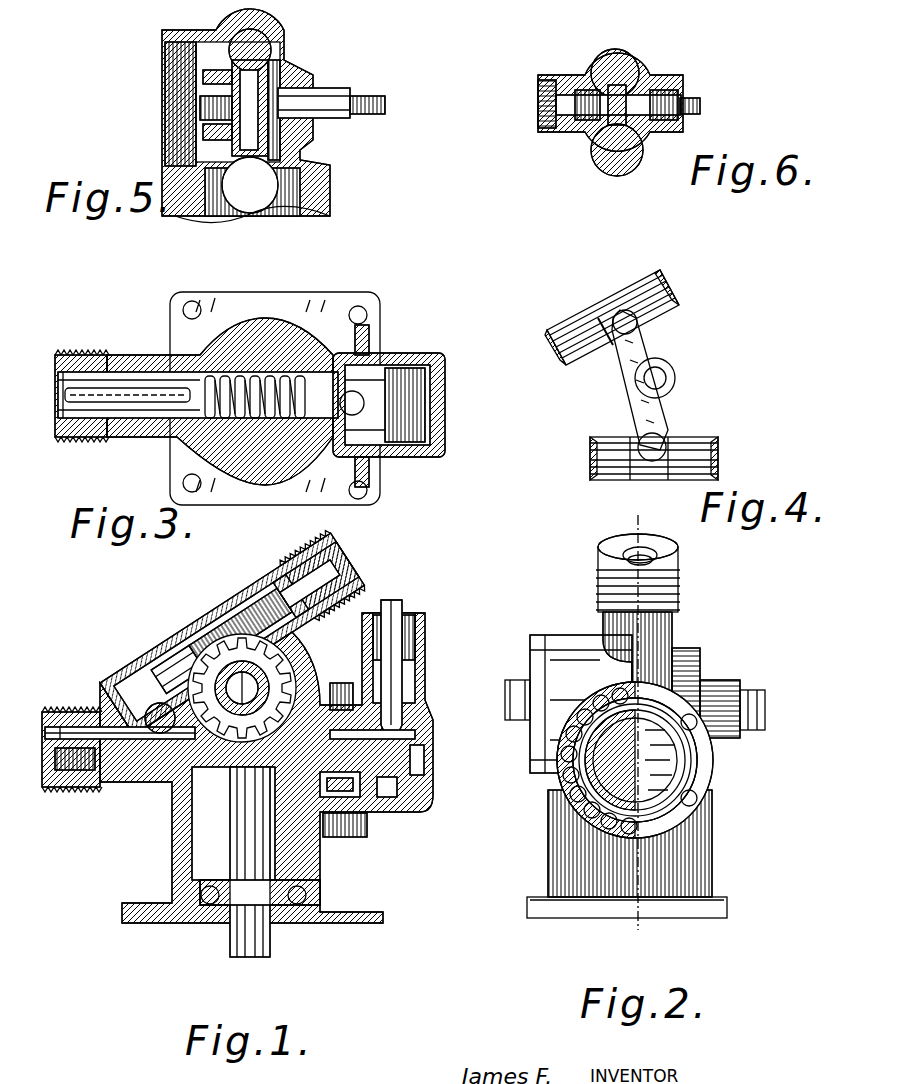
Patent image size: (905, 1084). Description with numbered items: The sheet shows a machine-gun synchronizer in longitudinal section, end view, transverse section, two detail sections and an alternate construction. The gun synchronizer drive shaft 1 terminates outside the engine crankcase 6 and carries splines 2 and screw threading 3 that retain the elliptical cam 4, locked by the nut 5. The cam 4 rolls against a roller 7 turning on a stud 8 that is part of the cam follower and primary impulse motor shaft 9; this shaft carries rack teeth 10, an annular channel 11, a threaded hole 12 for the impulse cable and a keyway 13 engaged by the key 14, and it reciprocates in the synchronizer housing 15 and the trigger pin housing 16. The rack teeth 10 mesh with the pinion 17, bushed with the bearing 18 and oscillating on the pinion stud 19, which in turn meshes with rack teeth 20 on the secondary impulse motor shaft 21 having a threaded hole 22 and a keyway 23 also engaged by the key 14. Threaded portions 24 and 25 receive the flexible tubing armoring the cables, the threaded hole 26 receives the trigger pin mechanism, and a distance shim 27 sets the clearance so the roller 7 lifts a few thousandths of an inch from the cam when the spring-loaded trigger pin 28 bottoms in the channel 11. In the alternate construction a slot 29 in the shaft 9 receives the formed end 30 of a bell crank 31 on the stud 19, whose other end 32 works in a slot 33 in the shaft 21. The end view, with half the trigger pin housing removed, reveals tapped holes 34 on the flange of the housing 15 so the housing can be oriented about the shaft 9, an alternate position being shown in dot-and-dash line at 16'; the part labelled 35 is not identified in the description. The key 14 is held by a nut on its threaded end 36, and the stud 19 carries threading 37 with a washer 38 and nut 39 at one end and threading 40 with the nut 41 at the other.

In FIG. 1, the gun synchronizer drive shaft 1 is at (240, 940).
In FIG. 2, the gun synchronizer drive shaft 1 is at (630, 935).
In FIG. 1, the splines 2 is at (260, 896).
In FIG. 1, the screw threading 3 is at (32, 752).
In FIG. 5, the cam 4 is at (275, 195).
In FIG. 3, the cam 4 is at (270, 335).
In FIG. 1, the cam 4 is at (200, 830).
In FIG. 1, the nut 5 is at (156, 618).
In FIG. 1, the engine crankcase 6 is at (110, 640).
In FIG. 1, the roller 7 is at (405, 815).
In FIG. 3, the stud 8 is at (390, 445).
In FIG. 1, the stud 8 is at (433, 756).
In FIG. 5, the cam follower and primary impulse motor shaft 9 is at (318, 150).
In FIG. 6, the cam follower and primary impulse motor shaft 9 is at (600, 165).
In FIG. 3, the cam follower and primary impulse motor shaft 9 is at (150, 375).
In FIG. 4, the cam follower and primary impulse motor shaft 9 is at (715, 450).
In FIG. 1, the cam follower and primary impulse motor shaft 9 is at (100, 790).
In FIG. 3, the rack teeth 10 is at (235, 385).
In FIG. 1, the rack teeth 10 is at (142, 782).
In FIG. 3, the annular channel 11 is at (402, 380).
In FIG. 1, the annular channel 11 is at (433, 800).
In FIG. 1, the threaded hole 12 is at (62, 712).
In FIG. 6, the keyway 13 is at (625, 140).
In FIG. 3, the keyway 13 is at (122, 388).
In FIG. 1, the keyway 13 is at (88, 712).
In FIG. 6, the key 14 is at (560, 130).
In FIG. 1, the key 14 is at (142, 700).
In FIG. 5, the synchronizer housing 15 is at (322, 182).
In FIG. 6, the synchronizer housing 15 is at (672, 82).
In FIG. 3, the synchronizer housing 15 is at (325, 310).
In FIG. 1, the synchronizer housing 15 is at (172, 868).
In FIG. 2, the synchronizer housing 15 is at (652, 858).
In FIG. 3, the trigger pin housing 16 is at (409, 402).
In FIG. 1, the trigger pin housing 16 is at (449, 687).
In FIG. 2, the trigger pin housing 16 is at (673, 655).
In FIG. 2, the alternate position of trigger pin housing 16' is at (512, 829).
In FIG. 5, the pinion 17 is at (290, 60).
In FIG. 1, the pinion 17 is at (300, 662).
In FIG. 5, the pinion gear bearing bushing 18 is at (238, 58).
In FIG. 1, the pinion gear bearing bushing 18 is at (262, 600).
In FIG. 5, the pinion stud 19 is at (336, 102).
In FIG. 4, the pinion stud 19 is at (662, 378).
In FIG. 1, the pinion stud 19 is at (250, 690).
In FIG. 1, the rack teeth 20 is at (166, 690).
In FIG. 5, the secondary impulse motor shaft 21 is at (258, 46).
In FIG. 6, the secondary impulse motor shaft 21 is at (640, 76).
In FIG. 4, the secondary impulse motor shaft 21 is at (640, 292).
In FIG. 1, the secondary impulse motor shaft 21 is at (352, 582).
In FIG. 2, the secondary impulse motor shaft 21 is at (625, 558).
In FIG. 1, the threaded hole 22 is at (332, 566).
In FIG. 2, the threaded hole 22 is at (626, 560).
In FIG. 6, the keyway 23 is at (592, 82).
In FIG. 1, the keyway 23 is at (160, 702).
In FIG. 1, the threaded portion 24 is at (375, 585).
In FIG. 2, the threaded portion 24 is at (680, 590).
In FIG. 3, the threaded portion 25 is at (75, 355).
In FIG. 1, the threaded portion 25 is at (69, 763).
In FIG. 1, the threaded hole 26 is at (428, 626).
In FIG. 3, the distance shim 27 is at (366, 330).
In FIG. 1, the distance shim 27 is at (370, 828).
In FIG. 1, the trigger pin 28 is at (404, 602).
In FIG. 4, the slot 29 is at (633, 472).
In FIG. 4, the formed end 30 is at (660, 445).
In FIG. 4, the bell crank 31 is at (640, 412).
In FIG. 4, the other end of bell crank 32 is at (640, 322).
In FIG. 4, the slot 33 is at (600, 320).
In FIG. 1, the tapped holes 34 is at (350, 838).
In FIG. 2, the tapped holes 34 is at (625, 836).
In FIG. 2, the box 35 is at (535, 650).
In FIG. 6, the threaded end 36 is at (700, 105).
In FIG. 5, the threading 37 is at (205, 105).
In FIG. 5, the washer 38 is at (213, 75).
In FIG. 5, the nut 39 is at (205, 128).
In FIG. 5, the threading 40 is at (370, 105).
In FIG. 2, the nut 41 is at (745, 700).